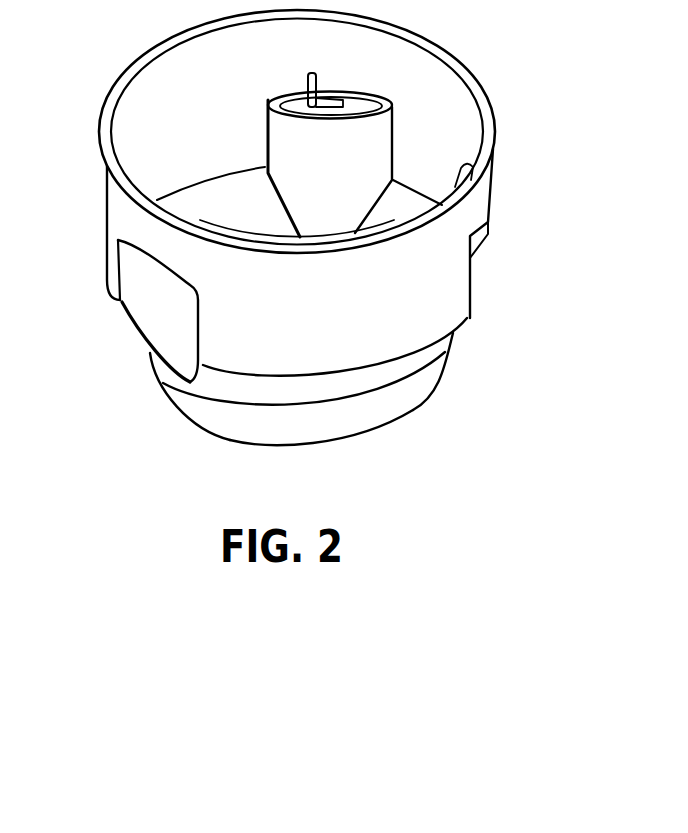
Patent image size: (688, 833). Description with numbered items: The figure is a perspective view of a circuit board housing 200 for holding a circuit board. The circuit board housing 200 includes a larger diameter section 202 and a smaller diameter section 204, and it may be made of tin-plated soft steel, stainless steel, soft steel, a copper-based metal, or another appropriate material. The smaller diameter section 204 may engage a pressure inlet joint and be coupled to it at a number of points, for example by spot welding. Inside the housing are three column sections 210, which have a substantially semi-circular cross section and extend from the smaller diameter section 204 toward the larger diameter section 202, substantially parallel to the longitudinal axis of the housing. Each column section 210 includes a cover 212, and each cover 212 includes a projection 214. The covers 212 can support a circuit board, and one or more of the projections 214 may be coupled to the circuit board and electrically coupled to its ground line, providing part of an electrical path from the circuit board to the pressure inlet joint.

The circuit board housing 200 is at (402, 385).
The larger diameter section 202 is at (443, 307).
The smaller diameter section 204 is at (172, 387).
The column section 210 is at (375, 163).
The cover 212 is at (358, 97).
The projection 214 is at (303, 80).